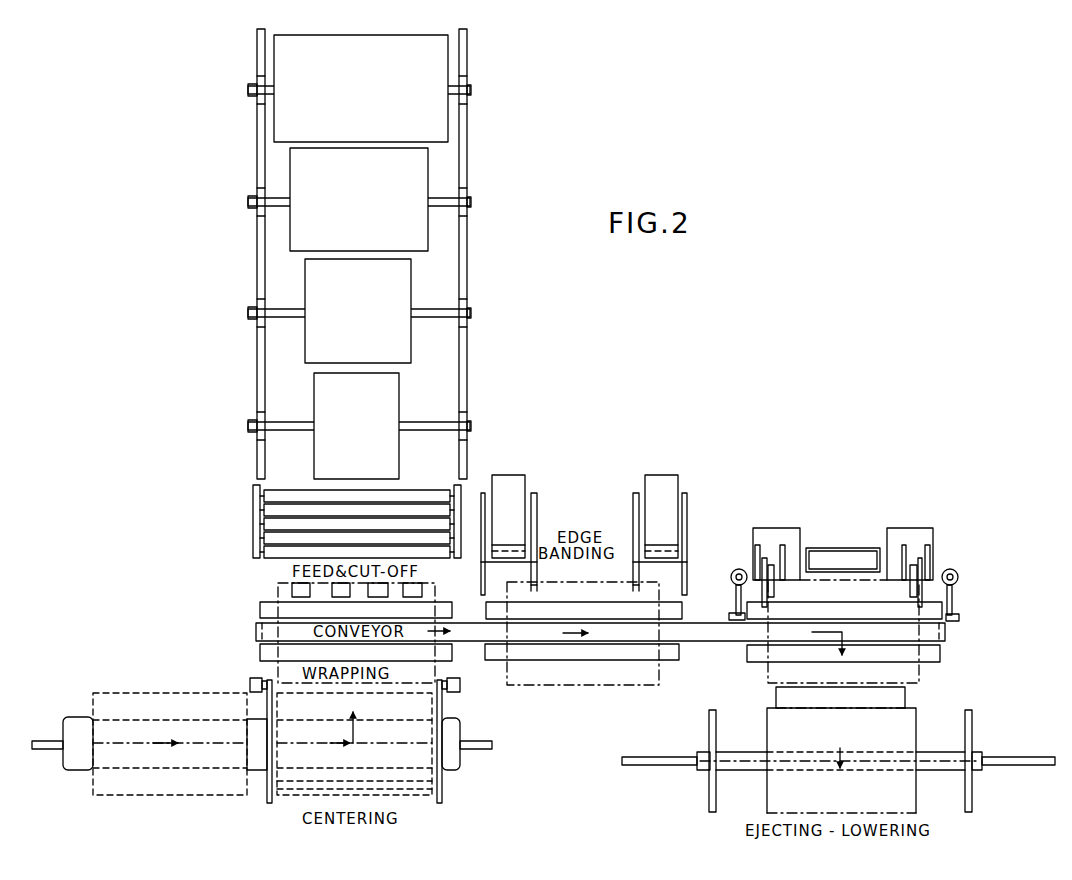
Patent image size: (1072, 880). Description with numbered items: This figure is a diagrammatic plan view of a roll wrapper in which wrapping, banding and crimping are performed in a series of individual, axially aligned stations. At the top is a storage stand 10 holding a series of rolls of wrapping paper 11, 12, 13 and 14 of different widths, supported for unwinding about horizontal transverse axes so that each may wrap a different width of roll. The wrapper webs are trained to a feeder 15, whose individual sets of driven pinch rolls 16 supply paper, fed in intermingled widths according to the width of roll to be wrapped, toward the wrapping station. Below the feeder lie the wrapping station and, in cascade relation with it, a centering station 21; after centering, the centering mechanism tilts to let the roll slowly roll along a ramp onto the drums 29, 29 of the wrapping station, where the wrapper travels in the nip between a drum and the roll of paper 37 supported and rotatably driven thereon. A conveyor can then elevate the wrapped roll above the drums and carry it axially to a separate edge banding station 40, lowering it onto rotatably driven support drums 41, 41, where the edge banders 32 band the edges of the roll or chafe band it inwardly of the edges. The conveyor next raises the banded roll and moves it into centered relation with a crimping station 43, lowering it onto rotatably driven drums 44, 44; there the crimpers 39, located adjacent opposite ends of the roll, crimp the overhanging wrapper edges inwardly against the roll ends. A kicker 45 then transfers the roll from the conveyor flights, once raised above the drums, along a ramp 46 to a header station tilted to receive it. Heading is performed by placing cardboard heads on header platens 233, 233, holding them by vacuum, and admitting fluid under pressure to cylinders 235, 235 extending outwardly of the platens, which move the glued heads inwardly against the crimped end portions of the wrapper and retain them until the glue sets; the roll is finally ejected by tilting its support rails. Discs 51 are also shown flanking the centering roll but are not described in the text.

The storage stand 10 is at (251, 246).
The roll of wrapping paper 11 is at (432, 118).
The roll of wrapping paper 12 is at (424, 178).
The roll of wrapping paper 13 is at (393, 289).
The roll of wrapping paper 14 is at (393, 391).
The feeder 15 is at (324, 521).
The pinch rolls 16 is at (266, 510).
The centering station 21 is at (443, 790).
The drums 29 is at (260, 612).
The edge banders 32 is at (480, 503).
The roll of paper 37 is at (436, 670).
The crimpers 39 is at (750, 538).
The edge banding station 40 is at (583, 664).
The support drums 41 is at (602, 646).
The crimping station 43 is at (946, 653).
The drums 44 is at (865, 644).
The kicker 45 is at (860, 546).
The ramp 46 is at (906, 690).
The centering discs 51 is at (275, 800).
The header platens 233 is at (709, 731).
The cylinders 235 is at (660, 768).